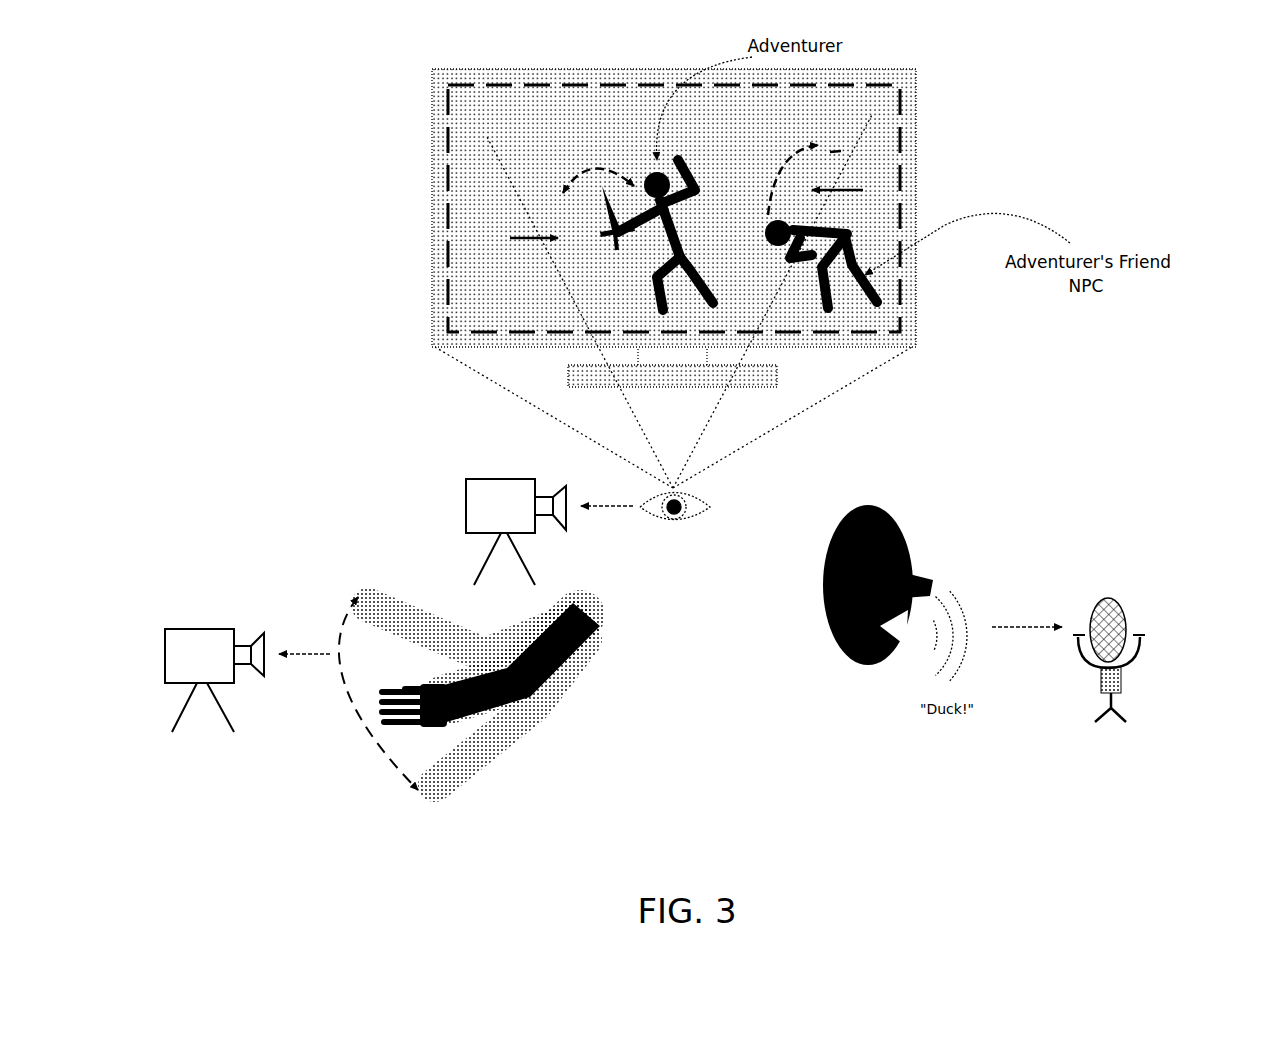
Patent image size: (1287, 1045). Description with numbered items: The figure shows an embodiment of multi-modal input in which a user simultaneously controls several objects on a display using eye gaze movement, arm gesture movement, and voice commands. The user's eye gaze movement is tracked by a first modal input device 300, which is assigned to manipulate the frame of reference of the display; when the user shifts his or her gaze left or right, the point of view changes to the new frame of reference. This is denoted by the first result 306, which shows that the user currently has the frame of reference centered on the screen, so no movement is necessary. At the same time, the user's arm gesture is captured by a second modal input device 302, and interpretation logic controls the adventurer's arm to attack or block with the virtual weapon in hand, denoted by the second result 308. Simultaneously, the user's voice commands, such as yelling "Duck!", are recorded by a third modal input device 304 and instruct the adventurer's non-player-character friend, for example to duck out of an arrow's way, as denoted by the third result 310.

The modal input device 3A 300 is at (495, 472).
The modal input device 3B 302 is at (221, 625).
The modal input device 3C 304 is at (1105, 595).
The result 3A 306 is at (570, 182).
The Result 3A 308 is at (575, 165).
The Result 3C 310 is at (815, 147).